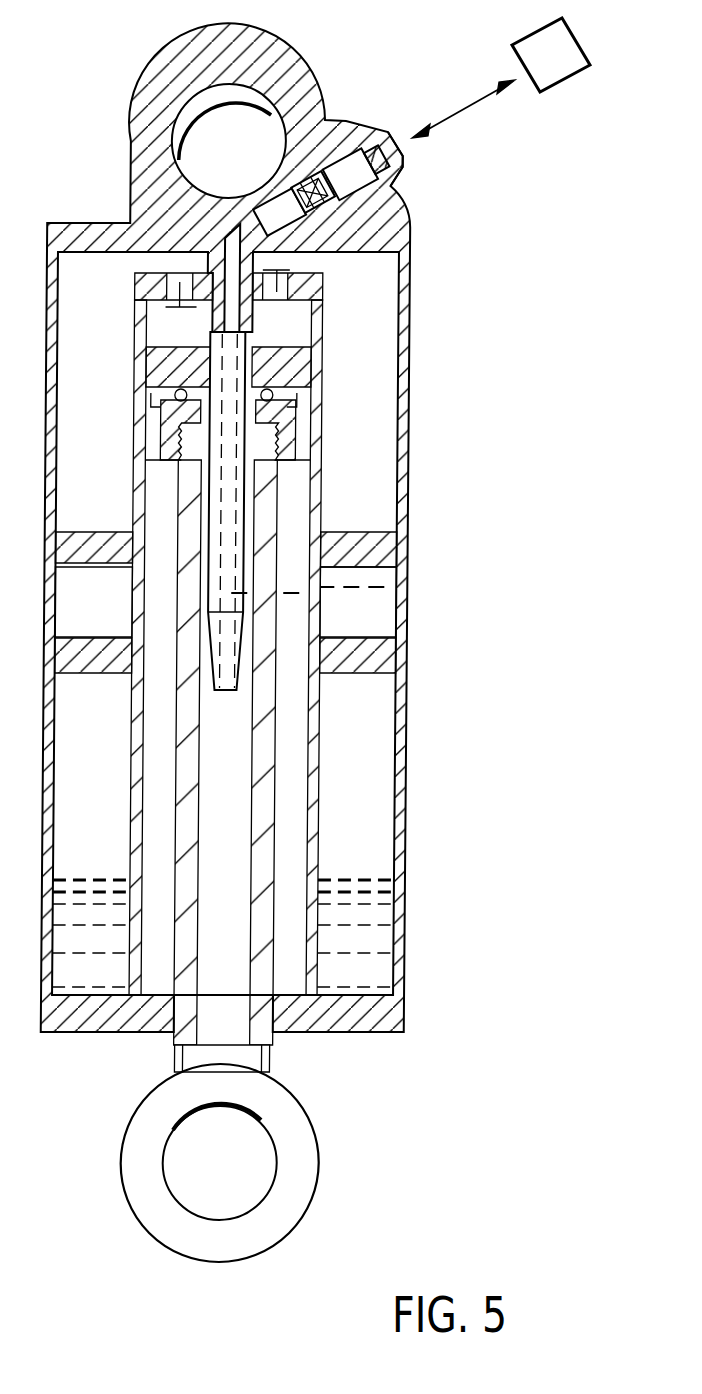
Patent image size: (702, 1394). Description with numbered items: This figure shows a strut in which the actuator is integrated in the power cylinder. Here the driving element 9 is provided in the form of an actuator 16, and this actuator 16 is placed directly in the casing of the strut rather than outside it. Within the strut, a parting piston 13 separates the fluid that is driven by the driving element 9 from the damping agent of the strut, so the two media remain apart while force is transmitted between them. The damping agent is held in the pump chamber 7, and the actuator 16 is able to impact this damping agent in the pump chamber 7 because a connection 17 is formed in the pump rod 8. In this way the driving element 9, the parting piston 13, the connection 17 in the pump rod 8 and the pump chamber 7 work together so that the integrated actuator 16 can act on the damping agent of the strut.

The pump chamber 7 is at (230, 833).
The pump rod 8 is at (242, 502).
The driving element 9 is at (570, 65).
The parting piston 13 is at (317, 178).
The actuator 16 is at (388, 190).
The connection 17 is at (388, 587).